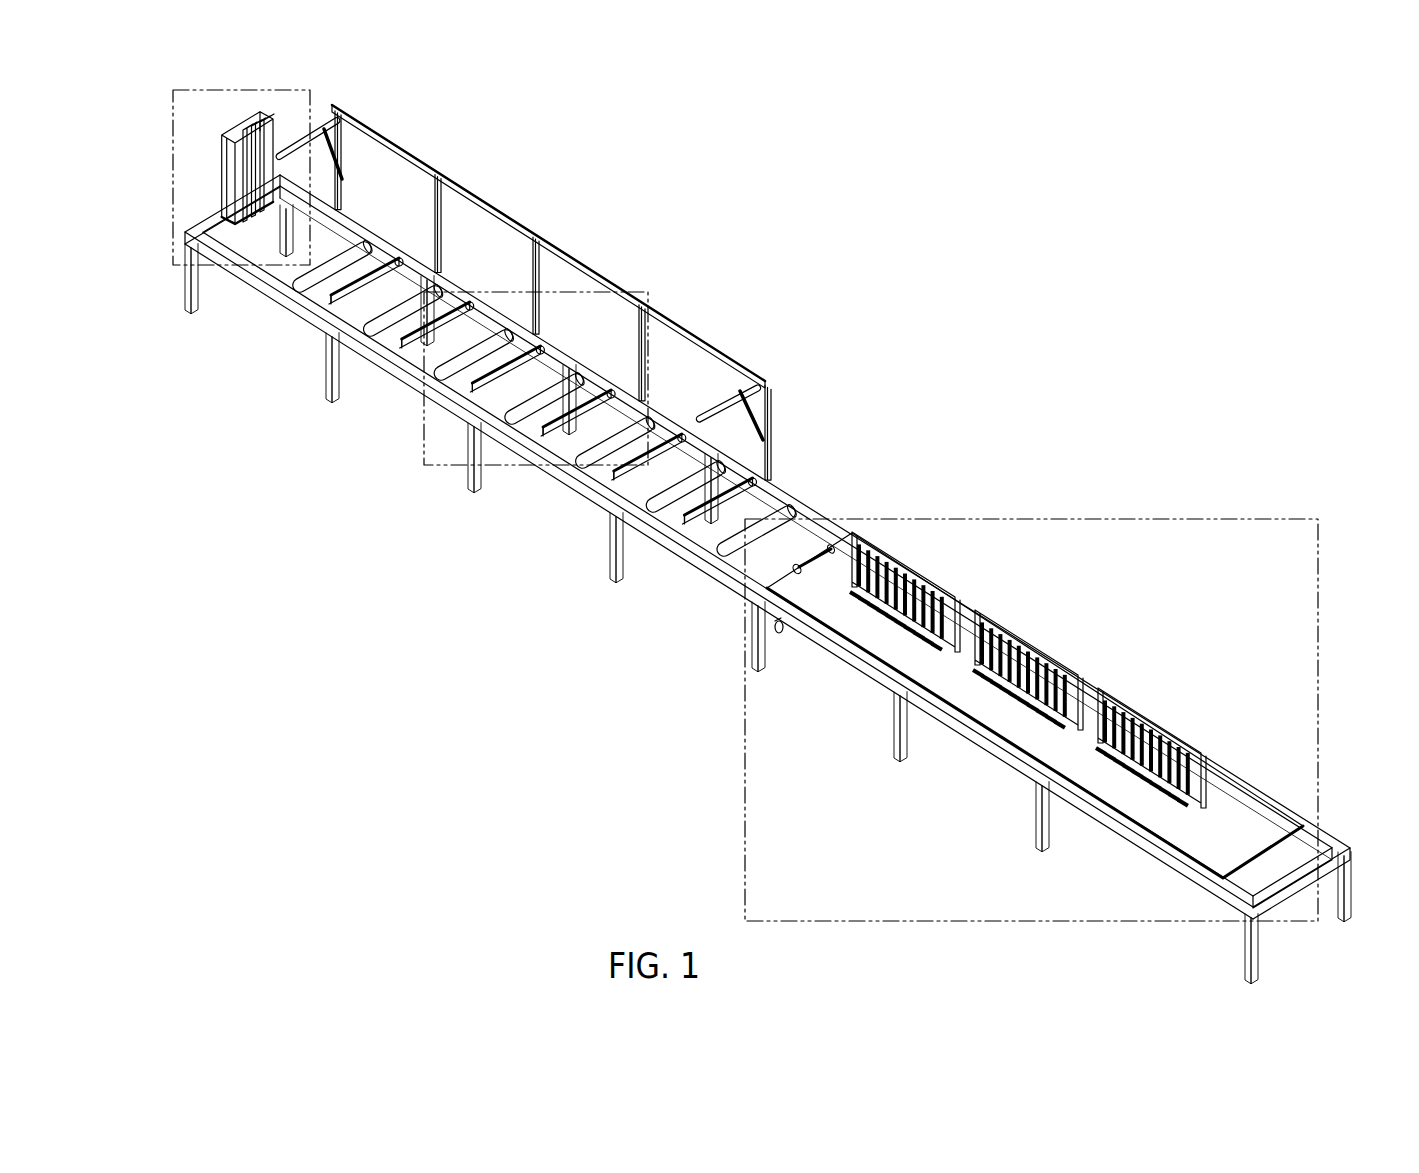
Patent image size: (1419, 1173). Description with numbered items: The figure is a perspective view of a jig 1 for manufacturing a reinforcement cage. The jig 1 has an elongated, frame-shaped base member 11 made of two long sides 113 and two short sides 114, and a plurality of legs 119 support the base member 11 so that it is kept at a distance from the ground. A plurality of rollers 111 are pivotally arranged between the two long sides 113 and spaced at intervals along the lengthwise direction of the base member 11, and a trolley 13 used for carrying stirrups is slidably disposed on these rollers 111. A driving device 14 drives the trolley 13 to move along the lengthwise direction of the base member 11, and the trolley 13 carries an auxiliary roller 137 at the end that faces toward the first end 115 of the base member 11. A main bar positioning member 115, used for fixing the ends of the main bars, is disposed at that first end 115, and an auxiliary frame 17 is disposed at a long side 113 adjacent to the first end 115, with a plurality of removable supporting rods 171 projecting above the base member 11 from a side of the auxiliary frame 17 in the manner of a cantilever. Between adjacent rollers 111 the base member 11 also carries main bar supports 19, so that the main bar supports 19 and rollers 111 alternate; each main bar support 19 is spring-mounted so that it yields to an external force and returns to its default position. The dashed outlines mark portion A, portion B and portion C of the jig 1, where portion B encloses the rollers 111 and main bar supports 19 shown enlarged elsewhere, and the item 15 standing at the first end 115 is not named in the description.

The jig 1 is at (912, 328).
The base member 11 is at (1325, 867).
The long side 113 is at (570, 479).
The short side 114 is at (208, 216).
The main bar positioning member 115 is at (190, 219).
The leg 119 is at (188, 291).
The stack of plates 15 is at (224, 132).
The auxiliary frame 17 is at (707, 329).
The supporting rod 171 is at (301, 145).
The roller 111 is at (453, 363).
The main bar support 19 is at (473, 383).
The auxiliary roller 137 is at (812, 555).
The driving device 14 is at (777, 624).
The trolley 13 is at (1233, 797).
The accumulation section A is at (1148, 518).
The portion B is at (557, 292).
The stack section C is at (172, 131).